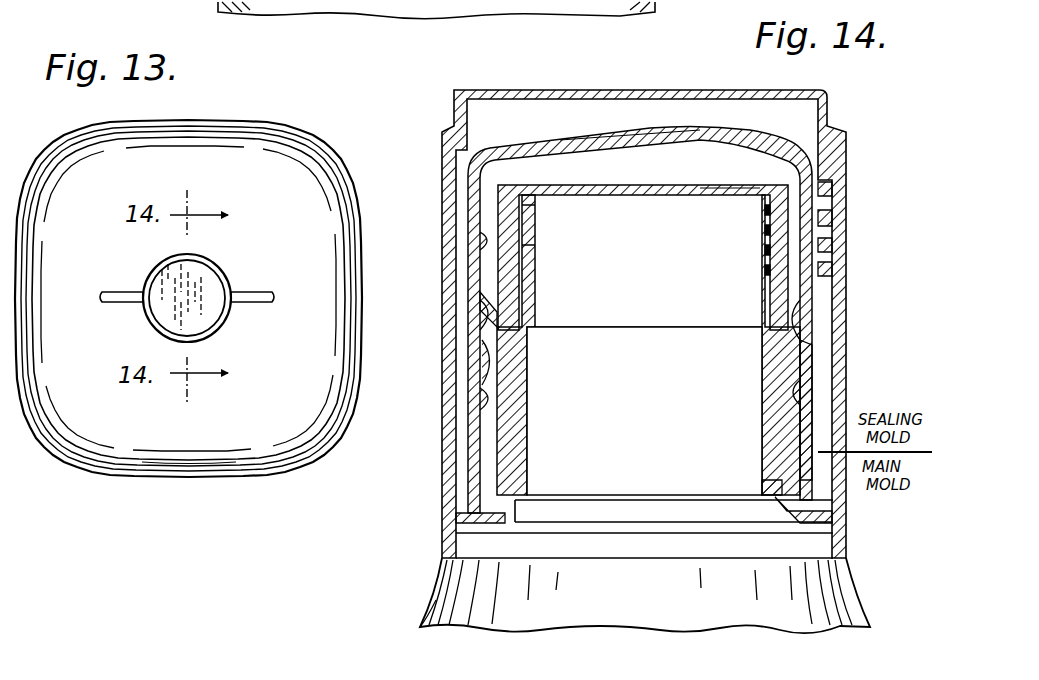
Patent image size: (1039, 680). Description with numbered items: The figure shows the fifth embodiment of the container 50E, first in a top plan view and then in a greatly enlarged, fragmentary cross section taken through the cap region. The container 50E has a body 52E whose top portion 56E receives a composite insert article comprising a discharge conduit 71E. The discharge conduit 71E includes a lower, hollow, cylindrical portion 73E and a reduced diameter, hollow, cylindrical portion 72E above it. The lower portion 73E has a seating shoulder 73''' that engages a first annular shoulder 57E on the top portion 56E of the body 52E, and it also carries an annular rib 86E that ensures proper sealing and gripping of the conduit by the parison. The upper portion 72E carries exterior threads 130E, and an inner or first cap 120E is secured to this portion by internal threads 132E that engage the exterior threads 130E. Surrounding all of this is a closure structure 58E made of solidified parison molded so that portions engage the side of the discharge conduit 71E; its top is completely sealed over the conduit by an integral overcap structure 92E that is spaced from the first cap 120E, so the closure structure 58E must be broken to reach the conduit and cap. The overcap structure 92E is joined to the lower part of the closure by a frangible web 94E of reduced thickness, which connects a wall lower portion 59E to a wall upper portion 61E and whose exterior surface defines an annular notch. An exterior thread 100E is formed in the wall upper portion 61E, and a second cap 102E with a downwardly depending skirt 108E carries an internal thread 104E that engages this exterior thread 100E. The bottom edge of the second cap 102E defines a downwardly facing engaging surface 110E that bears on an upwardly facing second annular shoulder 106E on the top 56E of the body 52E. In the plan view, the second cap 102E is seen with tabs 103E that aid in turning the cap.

In FIG. 13, the container 50E is at (280, 128).
In FIG. 14, the container 50E is at (434, 559).
In FIG. 13, the container body 52E is at (216, 462).
In FIG. 14, the container body 52E is at (434, 588).
In FIG. 13, the second cap 102E is at (222, 258).
In FIG. 14, the second cap 102E is at (845, 143).
In FIG. 13, the tabs 103E is at (126, 303).
In FIG. 14, the closure structure 58E is at (545, 125).
In FIG. 14, the overcap structure 92E is at (706, 132).
In FIG. 14, the first cap 120E is at (563, 184).
In FIG. 14, the discharge conduit 71E is at (700, 181).
In FIG. 14, the internal thread 104E is at (836, 203).
In FIG. 14, the exterior thread 100E is at (824, 221).
In FIG. 14, the exterior threads 130E is at (757, 212).
In FIG. 14, the internal threads 132E is at (760, 235).
In FIG. 14, the skirt 108E is at (476, 283).
In FIG. 14, the wall upper portion 61E is at (500, 300).
In FIG. 14, the frangible web 94E is at (495, 323).
In FIG. 14, the annular rib 86E is at (502, 369).
In FIG. 14, the wall lower portion 59E is at (478, 421).
In FIG. 14, the reduced diameter cylindrical portion 72E is at (746, 306).
In FIG. 14, the lower cylindrical portion 73E is at (762, 387).
In FIG. 14, the first annular shoulder 57E is at (792, 441).
In FIG. 14, the seating shoulder 73''' is at (725, 479).
In FIG. 14, the second annular shoulder 106E is at (453, 508).
In FIG. 14, the engaging surface 110E is at (453, 522).
In FIG. 14, the top portion of container body 56E is at (805, 522).